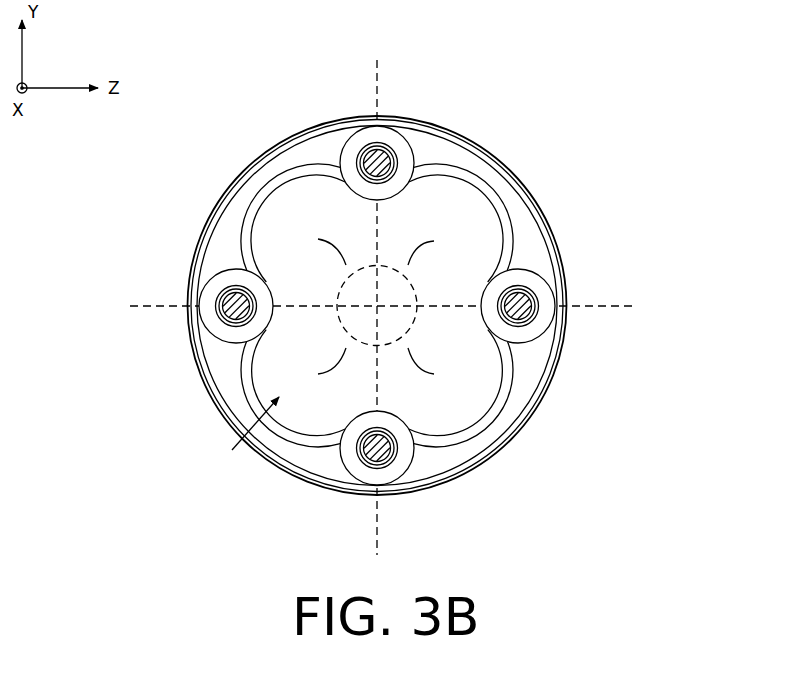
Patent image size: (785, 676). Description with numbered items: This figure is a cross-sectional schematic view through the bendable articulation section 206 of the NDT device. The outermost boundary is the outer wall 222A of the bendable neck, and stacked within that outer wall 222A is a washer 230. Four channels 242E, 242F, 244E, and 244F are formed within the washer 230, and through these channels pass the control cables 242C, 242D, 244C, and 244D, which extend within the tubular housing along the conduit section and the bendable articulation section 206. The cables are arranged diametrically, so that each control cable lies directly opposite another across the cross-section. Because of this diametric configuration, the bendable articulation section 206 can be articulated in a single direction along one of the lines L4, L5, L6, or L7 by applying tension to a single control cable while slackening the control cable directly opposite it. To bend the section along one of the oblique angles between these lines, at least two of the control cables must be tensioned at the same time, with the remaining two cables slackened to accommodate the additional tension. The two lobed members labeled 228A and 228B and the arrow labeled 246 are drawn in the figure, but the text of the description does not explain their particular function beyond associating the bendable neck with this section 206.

The bendable articulation section 206 is at (566, 158).
The washer 230 is at (564, 196).
The outer wall 222A is at (566, 236).
The flexure member 228A is at (212, 246).
The flexure member 228B is at (299, 182).
The control cable 242C is at (396, 152).
The control cable 242D is at (390, 458).
The channel 242E is at (361, 138).
The channel 242F is at (342, 468).
The control cable 244C is at (544, 286).
The control cable 244D is at (226, 320).
The channel 244E is at (547, 322).
The channel 244F is at (210, 282).
The direction arrow 246 is at (232, 450).
The line L4 is at (383, 88).
The line L5 is at (133, 304).
The line L6 is at (383, 525).
The line L7 is at (620, 304).